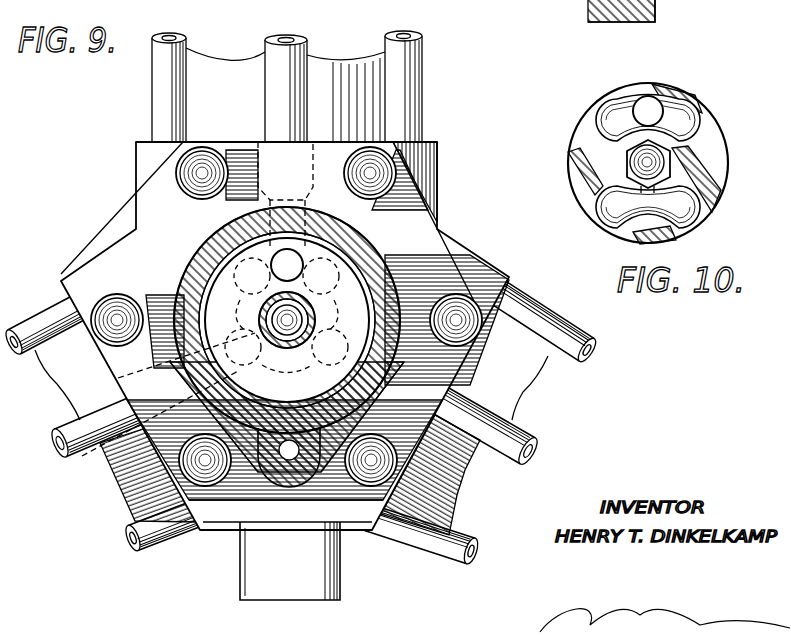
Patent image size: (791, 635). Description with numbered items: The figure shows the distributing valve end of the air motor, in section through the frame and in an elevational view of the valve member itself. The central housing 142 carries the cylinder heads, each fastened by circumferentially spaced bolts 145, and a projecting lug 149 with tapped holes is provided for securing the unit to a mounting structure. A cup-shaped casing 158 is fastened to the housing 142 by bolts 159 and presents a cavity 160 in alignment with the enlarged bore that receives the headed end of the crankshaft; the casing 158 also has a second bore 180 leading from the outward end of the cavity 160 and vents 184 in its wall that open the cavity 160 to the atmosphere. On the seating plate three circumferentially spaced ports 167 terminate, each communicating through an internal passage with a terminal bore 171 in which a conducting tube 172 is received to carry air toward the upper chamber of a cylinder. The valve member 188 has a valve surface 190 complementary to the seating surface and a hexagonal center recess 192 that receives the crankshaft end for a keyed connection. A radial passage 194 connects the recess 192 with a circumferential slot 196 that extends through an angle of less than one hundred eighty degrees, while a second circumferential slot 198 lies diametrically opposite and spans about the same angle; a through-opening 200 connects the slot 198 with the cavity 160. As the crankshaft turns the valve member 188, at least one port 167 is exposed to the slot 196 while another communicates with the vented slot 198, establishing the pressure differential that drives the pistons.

In FIG. 9, the central housing 142 is at (130, 200).
In FIG. 9, the bolts 145 is at (157, 72).
In FIG. 9, the projecting lug 149 is at (341, 568).
In FIG. 9, the cup-shaped casing 158 is at (128, 372).
In FIG. 9, the bolts 159 is at (382, 165).
In FIG. 9, the cavity 160 is at (331, 253).
In FIG. 9, the ports 167 is at (286, 255).
In FIG. 9, the terminal bore 171 is at (262, 157).
In FIG. 9, the conducting tube 172 is at (310, 47).
In FIG. 9, the second bore 180 is at (217, 540).
In FIG. 9, the vents 184 is at (210, 267).
In FIG. 9, the valve member 188 is at (375, 300).
In FIG. 10, the valve member 188 is at (588, 110).
In FIG. 10, the valve surface 190 is at (590, 197).
In FIG. 10, the center recess 192 is at (662, 166).
In FIG. 9, the radial passage 194 is at (336, 332).
In FIG. 10, the radial passage 194 is at (645, 204).
In FIG. 9, the circumferential slot 196 is at (215, 420).
In FIG. 10, the circumferential slot 196 is at (665, 226).
In FIG. 9, the circumferential slot 198 is at (217, 251).
In FIG. 10, the circumferential slot 198 is at (685, 113).
In FIG. 9, the through-opening 200 is at (273, 259).
In FIG. 10, the through-opening 200 is at (646, 103).